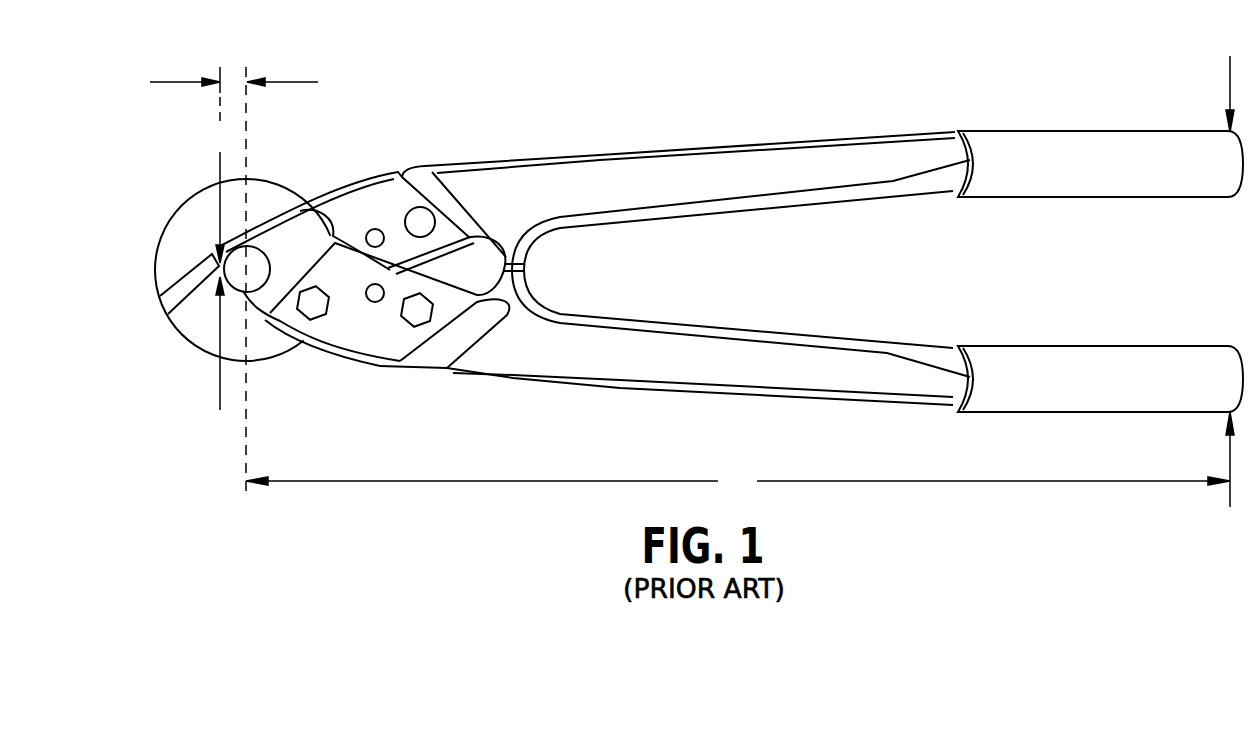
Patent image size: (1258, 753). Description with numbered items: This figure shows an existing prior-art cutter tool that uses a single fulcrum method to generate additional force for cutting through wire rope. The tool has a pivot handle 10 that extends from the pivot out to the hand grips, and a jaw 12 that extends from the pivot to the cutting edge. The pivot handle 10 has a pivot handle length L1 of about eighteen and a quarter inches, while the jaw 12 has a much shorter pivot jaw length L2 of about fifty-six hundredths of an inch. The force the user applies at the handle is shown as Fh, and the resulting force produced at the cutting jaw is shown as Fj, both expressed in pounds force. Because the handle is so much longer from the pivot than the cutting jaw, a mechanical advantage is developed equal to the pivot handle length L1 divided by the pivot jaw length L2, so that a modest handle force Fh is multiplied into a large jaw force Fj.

The pivot handle 10 is at (757, 326).
The jaw 12 is at (186, 198).
The pivot handle length L1 is at (738, 481).
The pivot jaw length L2 is at (249, 96).
The force applied at the jaw Fj is at (220, 282).
The force applied at the handle Fh is at (1232, 284).